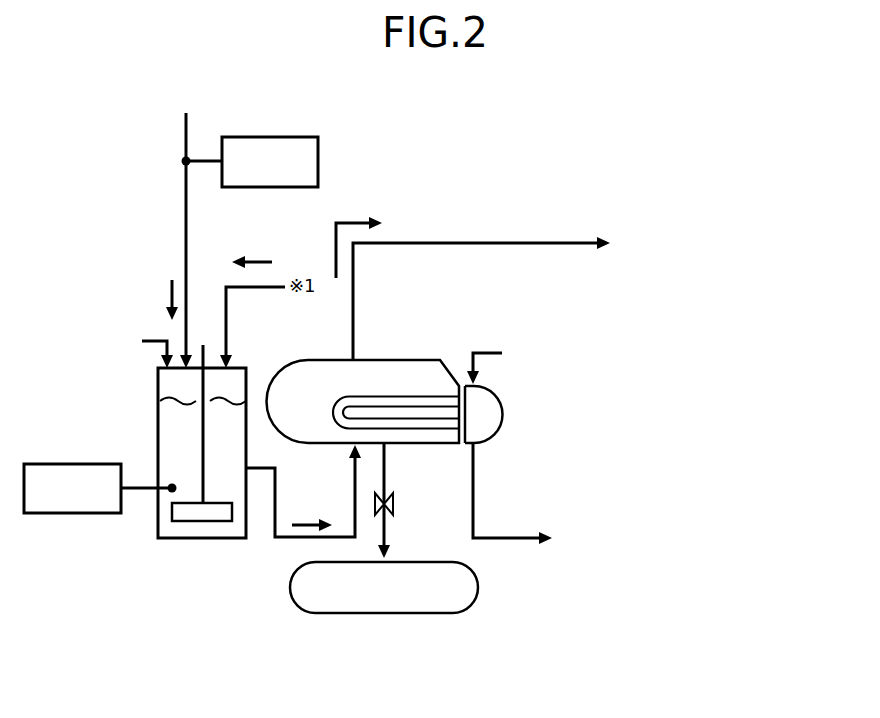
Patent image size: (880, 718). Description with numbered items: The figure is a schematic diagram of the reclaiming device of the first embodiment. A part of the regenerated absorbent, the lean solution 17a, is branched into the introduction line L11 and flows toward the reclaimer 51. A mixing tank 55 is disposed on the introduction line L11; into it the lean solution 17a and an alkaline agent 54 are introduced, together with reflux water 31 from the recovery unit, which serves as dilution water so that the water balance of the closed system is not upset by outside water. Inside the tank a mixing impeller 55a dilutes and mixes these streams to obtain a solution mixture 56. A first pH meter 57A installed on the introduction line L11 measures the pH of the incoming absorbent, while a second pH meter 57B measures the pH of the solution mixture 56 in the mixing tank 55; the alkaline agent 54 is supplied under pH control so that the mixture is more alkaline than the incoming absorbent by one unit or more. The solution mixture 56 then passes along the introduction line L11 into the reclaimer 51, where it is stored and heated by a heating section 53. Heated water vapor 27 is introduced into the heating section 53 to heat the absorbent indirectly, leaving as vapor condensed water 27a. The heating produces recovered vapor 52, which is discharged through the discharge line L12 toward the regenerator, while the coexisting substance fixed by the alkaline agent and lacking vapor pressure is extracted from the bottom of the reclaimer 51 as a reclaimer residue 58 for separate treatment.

The mixing tank 55 is at (104, 442).
The mixing impeller 55a is at (205, 522).
The first pH meter 57A is at (265, 137).
The second pH meter 57B is at (75, 514).
The introduction line L11 is at (186, 224).
The lean solution 17a is at (170, 300).
The alkaline agent 54 is at (143, 350).
The reflux water 31 is at (256, 261).
The reclaimer 51 is at (412, 345).
The heating section 53 is at (434, 442).
The recovered vapor 52 is at (353, 220).
The discharge line L12 is at (473, 240).
The heated water vapor 27 is at (498, 364).
The vapor condensed water 27a is at (533, 496).
The solution mixture 56 is at (304, 521).
The reclaimer residue 58 is at (385, 614).